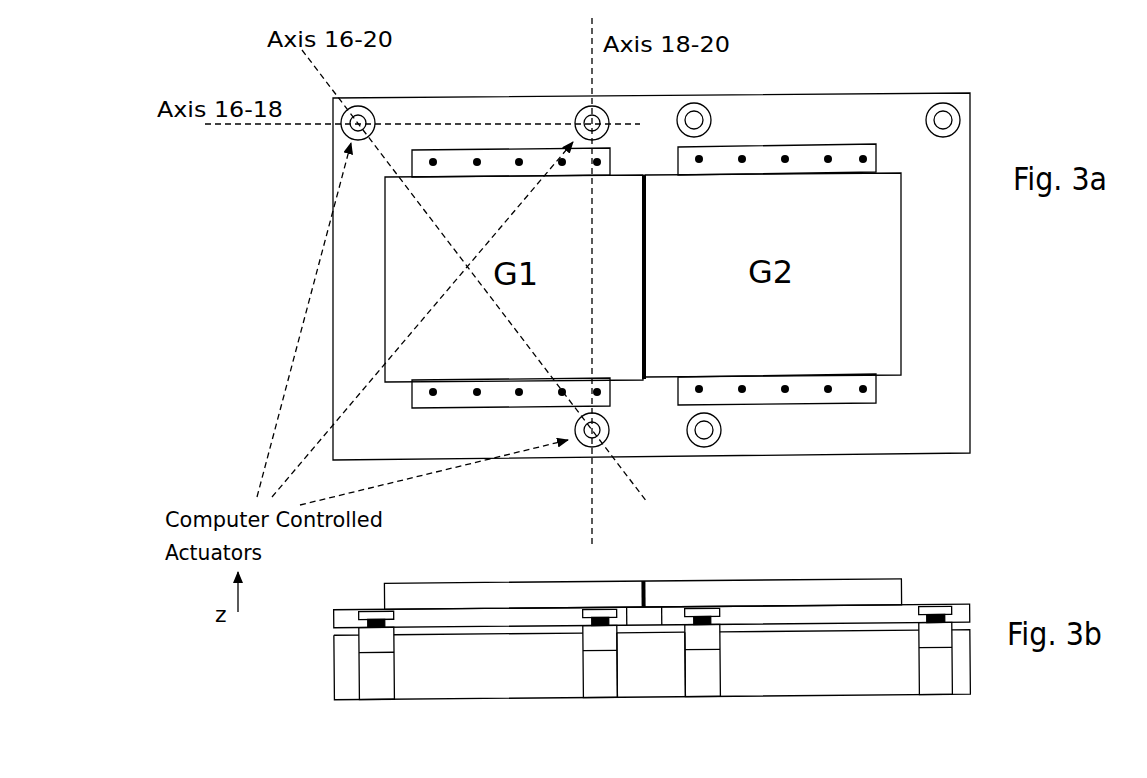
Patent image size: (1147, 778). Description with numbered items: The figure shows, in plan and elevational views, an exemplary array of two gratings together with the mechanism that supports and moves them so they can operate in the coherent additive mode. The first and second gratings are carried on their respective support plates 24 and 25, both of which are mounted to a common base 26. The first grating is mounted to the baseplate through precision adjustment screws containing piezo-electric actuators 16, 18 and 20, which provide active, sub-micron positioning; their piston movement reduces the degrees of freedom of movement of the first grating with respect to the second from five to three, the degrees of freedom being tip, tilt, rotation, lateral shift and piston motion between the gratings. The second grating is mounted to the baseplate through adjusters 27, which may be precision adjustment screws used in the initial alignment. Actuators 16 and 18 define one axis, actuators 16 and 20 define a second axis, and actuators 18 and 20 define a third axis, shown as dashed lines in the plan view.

In FIG. 3A, the piezo-electric actuator 16 is at (346, 133).
In FIG. 3A, the piezo-electric actuator 18 is at (580, 113).
In FIG. 3A, the piezo-electric actuator 20 is at (582, 444).
In FIG. 3A, the adjusters 27 is at (708, 139).
In FIG. 3B, the support plate 24 is at (332, 613).
In FIG. 3B, the support plate 25 is at (961, 604).
In FIG. 3B, the common base 26 is at (332, 673).